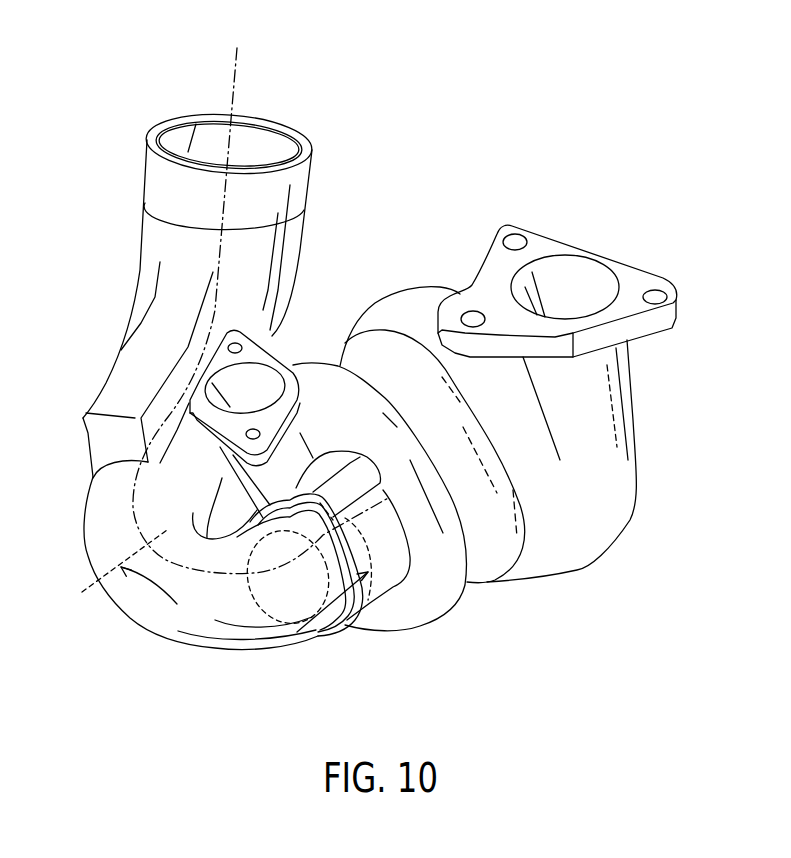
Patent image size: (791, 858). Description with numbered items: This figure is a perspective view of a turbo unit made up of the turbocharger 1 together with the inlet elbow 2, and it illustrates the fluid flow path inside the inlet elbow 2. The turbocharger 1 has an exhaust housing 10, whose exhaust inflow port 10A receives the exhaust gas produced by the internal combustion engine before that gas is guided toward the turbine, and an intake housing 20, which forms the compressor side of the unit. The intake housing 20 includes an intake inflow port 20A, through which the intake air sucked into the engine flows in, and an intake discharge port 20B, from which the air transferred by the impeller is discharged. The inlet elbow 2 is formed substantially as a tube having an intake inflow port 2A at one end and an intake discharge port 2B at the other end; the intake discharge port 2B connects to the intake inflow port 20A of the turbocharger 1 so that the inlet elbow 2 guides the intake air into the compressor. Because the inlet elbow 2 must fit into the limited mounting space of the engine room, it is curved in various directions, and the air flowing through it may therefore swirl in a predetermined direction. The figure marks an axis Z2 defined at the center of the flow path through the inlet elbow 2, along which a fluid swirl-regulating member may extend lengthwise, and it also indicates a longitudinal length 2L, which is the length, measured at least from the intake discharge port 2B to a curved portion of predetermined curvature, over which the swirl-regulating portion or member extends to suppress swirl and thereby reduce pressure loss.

The turbocharger 1 is at (522, 617).
The inlet elbow 2 is at (112, 623).
The intake inflow port 2A is at (261, 138).
The intake discharge port 2B is at (293, 572).
The longitudinal length 2L is at (174, 613).
The axis Z2 is at (232, 77).
The exhaust housing 10 is at (567, 535).
The exhaust inflow port 10A is at (563, 287).
The intake housing 20 is at (382, 552).
The intake inflow port 20A is at (365, 528).
The intake discharge port 20B is at (245, 388).